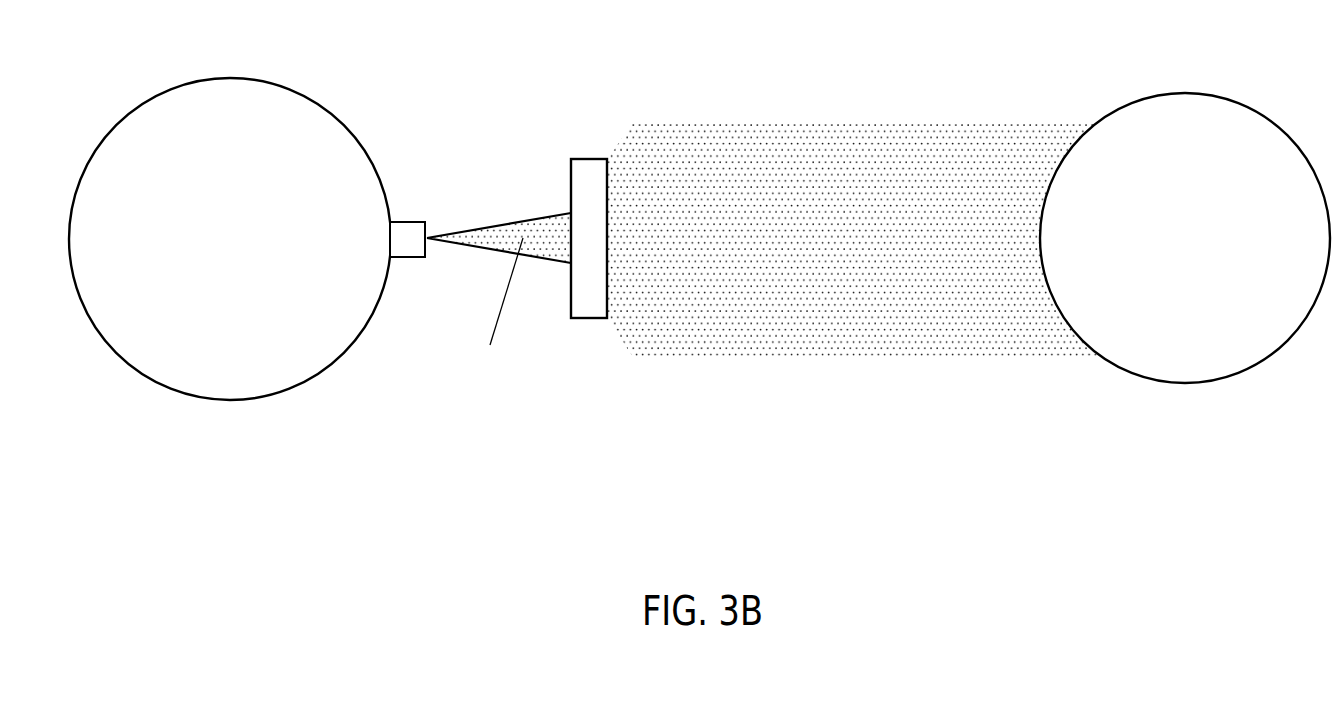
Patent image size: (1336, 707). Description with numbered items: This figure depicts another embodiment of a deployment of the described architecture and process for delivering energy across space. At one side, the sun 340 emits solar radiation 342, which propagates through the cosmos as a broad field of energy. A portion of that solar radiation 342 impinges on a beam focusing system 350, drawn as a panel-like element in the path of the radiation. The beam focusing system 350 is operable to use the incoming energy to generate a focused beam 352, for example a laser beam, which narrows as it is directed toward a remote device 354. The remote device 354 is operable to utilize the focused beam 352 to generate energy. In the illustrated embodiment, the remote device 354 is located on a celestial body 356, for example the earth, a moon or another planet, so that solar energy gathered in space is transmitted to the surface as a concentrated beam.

The sun 340 is at (1223, 98).
The solar radiation 342 is at (858, 122).
The beam focusing system 350 is at (592, 318).
The focused beam 352 is at (502, 215).
The remote device 354 is at (408, 258).
The celestial body 356 is at (278, 83).